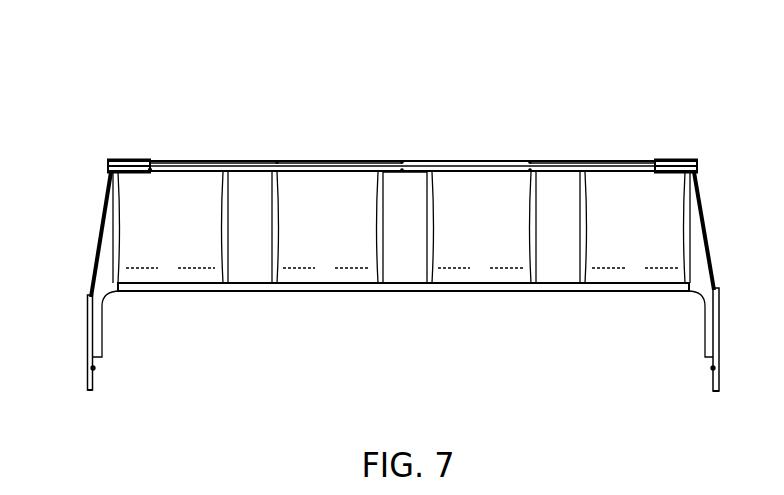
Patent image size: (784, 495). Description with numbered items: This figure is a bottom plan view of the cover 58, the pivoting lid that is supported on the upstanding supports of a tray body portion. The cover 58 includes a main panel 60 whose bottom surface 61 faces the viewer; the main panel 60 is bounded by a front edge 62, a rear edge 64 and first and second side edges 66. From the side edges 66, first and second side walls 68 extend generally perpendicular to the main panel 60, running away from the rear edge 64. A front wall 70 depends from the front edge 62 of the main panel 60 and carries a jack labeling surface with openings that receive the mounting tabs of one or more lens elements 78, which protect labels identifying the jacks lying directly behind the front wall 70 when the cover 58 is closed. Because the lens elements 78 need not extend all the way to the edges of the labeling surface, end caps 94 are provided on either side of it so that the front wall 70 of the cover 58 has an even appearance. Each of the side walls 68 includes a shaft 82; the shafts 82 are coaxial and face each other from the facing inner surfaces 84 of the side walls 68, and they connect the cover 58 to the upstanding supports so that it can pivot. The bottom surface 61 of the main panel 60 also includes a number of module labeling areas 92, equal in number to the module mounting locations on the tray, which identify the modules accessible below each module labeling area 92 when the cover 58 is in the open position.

The cover 58 is at (661, 85).
The main panel 60 is at (410, 292).
The bottom surface 61 is at (393, 213).
The front edge 62 is at (157, 173).
The rear edge 64 is at (243, 292).
The side edges 66 is at (100, 232).
The side walls 68 is at (88, 342).
The front wall 70 is at (368, 161).
The lens elements 78 is at (184, 161).
The shaft 82 is at (96, 372).
The inner surfaces 84 is at (93, 386).
The module labeling areas 92 is at (160, 231).
The end caps 94 is at (120, 160).